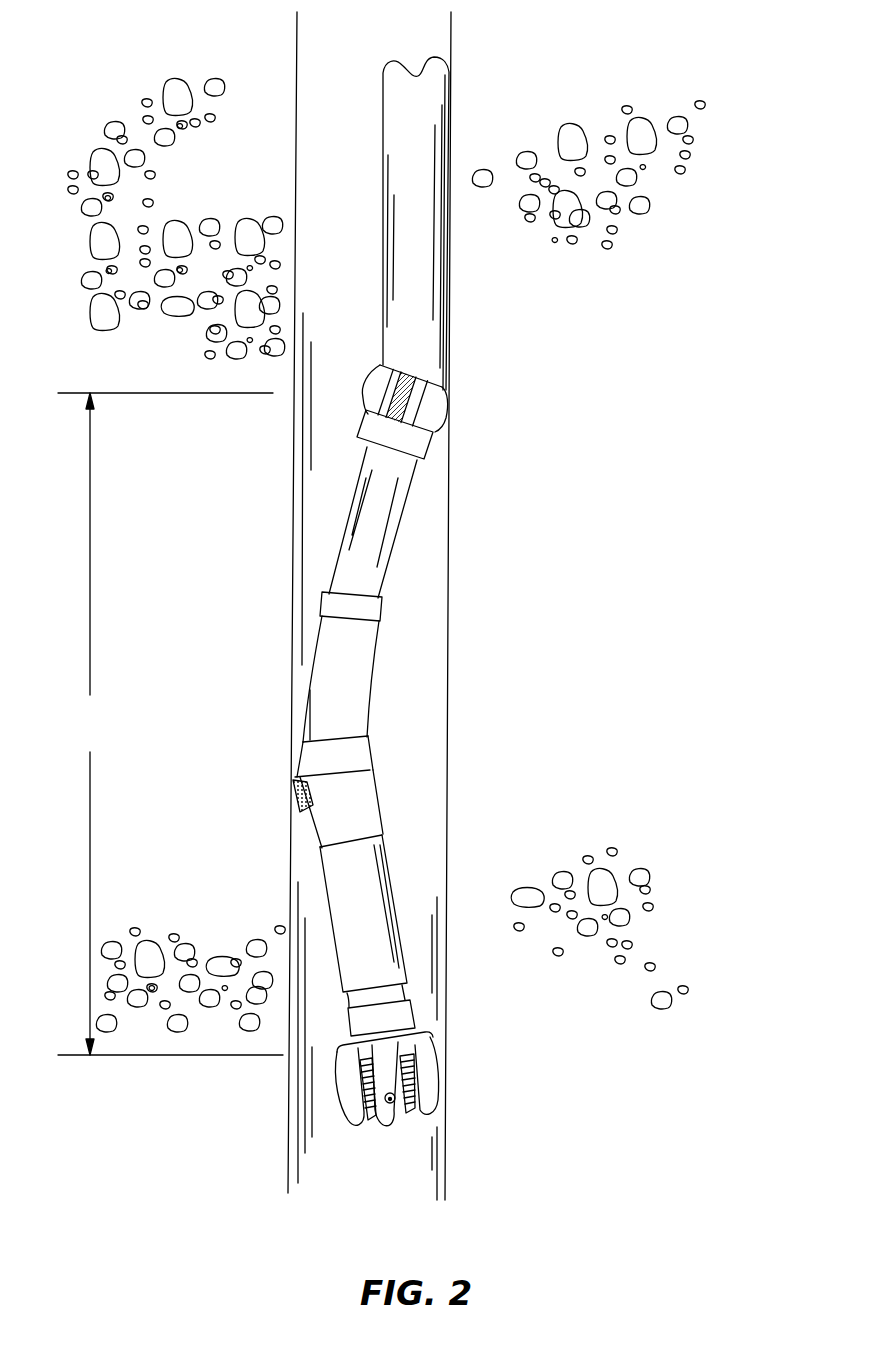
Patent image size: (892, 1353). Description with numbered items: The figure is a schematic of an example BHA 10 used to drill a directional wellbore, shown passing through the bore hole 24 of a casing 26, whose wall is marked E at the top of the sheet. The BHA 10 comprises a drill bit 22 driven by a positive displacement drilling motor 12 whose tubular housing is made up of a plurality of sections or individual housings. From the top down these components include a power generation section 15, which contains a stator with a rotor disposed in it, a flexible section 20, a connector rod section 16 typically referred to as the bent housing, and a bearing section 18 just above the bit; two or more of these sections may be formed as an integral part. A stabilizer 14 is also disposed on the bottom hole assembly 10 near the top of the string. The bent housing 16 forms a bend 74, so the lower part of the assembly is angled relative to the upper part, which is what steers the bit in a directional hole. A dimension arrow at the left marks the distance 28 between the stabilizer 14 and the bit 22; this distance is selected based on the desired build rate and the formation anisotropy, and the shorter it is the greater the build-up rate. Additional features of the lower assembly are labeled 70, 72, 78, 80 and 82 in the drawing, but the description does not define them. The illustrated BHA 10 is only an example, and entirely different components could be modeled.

The bottom hole assembly 10 is at (412, 817).
The positive displacement drilling motor 12 is at (388, 223).
The stabilizer 14 is at (428, 420).
The power generation section 15 is at (398, 148).
The connector rod section 16 is at (377, 672).
The bearing section 18 is at (395, 884).
The flexible section 20 is at (393, 527).
The drill bit 22 is at (449, 1055).
The bore hole 24 is at (386, 1215).
The casing 26 is at (292, 557).
The distance 28 is at (170, 724).
The lower housing 70 is at (333, 827).
The housing joint 72 is at (318, 836).
The bend 74 is at (370, 748).
The swivel connector 78 is at (450, 412).
The wall contact pad 80 is at (290, 783).
The gauge blade 82 is at (445, 1075).
The borehole wall E is at (433, 38).